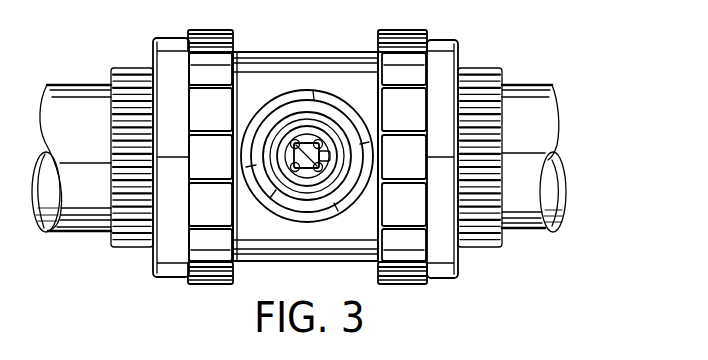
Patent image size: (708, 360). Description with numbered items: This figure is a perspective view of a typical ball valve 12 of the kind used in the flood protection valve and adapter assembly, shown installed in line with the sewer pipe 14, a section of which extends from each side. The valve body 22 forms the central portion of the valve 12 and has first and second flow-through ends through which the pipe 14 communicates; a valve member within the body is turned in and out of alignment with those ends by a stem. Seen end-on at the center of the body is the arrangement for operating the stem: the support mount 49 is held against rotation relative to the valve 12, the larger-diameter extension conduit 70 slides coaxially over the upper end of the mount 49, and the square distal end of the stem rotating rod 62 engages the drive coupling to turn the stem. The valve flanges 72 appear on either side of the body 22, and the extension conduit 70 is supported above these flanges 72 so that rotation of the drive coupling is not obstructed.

The ball valve 12 is at (570, 143).
The pipe 14 is at (71, 118).
The valve body 22 is at (287, 77).
The support mount 49 is at (273, 204).
The stem rotating rod 62 is at (306, 169).
The extension conduit 70 is at (342, 192).
The valve flanges 72 is at (224, 46).